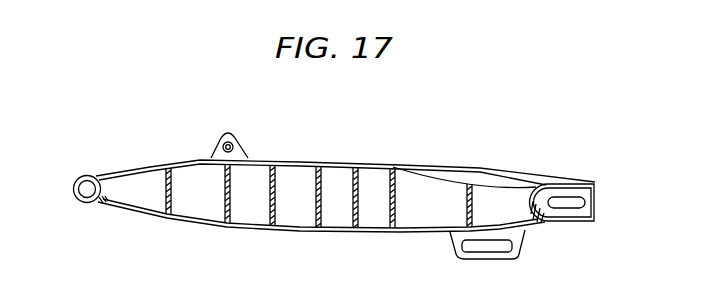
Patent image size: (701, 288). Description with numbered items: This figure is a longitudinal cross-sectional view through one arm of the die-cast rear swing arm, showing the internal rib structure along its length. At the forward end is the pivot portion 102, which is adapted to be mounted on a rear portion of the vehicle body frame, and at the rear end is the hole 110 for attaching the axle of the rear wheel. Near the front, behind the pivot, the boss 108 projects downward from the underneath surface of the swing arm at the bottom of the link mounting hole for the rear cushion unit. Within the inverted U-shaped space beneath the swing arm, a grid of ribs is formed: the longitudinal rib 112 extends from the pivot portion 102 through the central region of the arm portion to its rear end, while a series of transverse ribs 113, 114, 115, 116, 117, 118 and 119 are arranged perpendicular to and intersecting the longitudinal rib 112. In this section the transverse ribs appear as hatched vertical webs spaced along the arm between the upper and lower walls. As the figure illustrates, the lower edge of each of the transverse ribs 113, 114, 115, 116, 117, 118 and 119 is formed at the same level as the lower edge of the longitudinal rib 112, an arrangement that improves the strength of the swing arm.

The pivot portion 102 is at (88, 173).
The boss 108 is at (217, 141).
The hole 110 is at (572, 200).
The longitudinal rib 112 is at (417, 187).
The transverse rib 113 is at (167, 188).
The transverse rib 114 is at (227, 187).
The transverse rib 115 is at (272, 176).
The transverse rib 116 is at (318, 177).
The transverse rib 117 is at (355, 178).
The transverse rib 118 is at (392, 178).
The transverse rib 119 is at (468, 190).